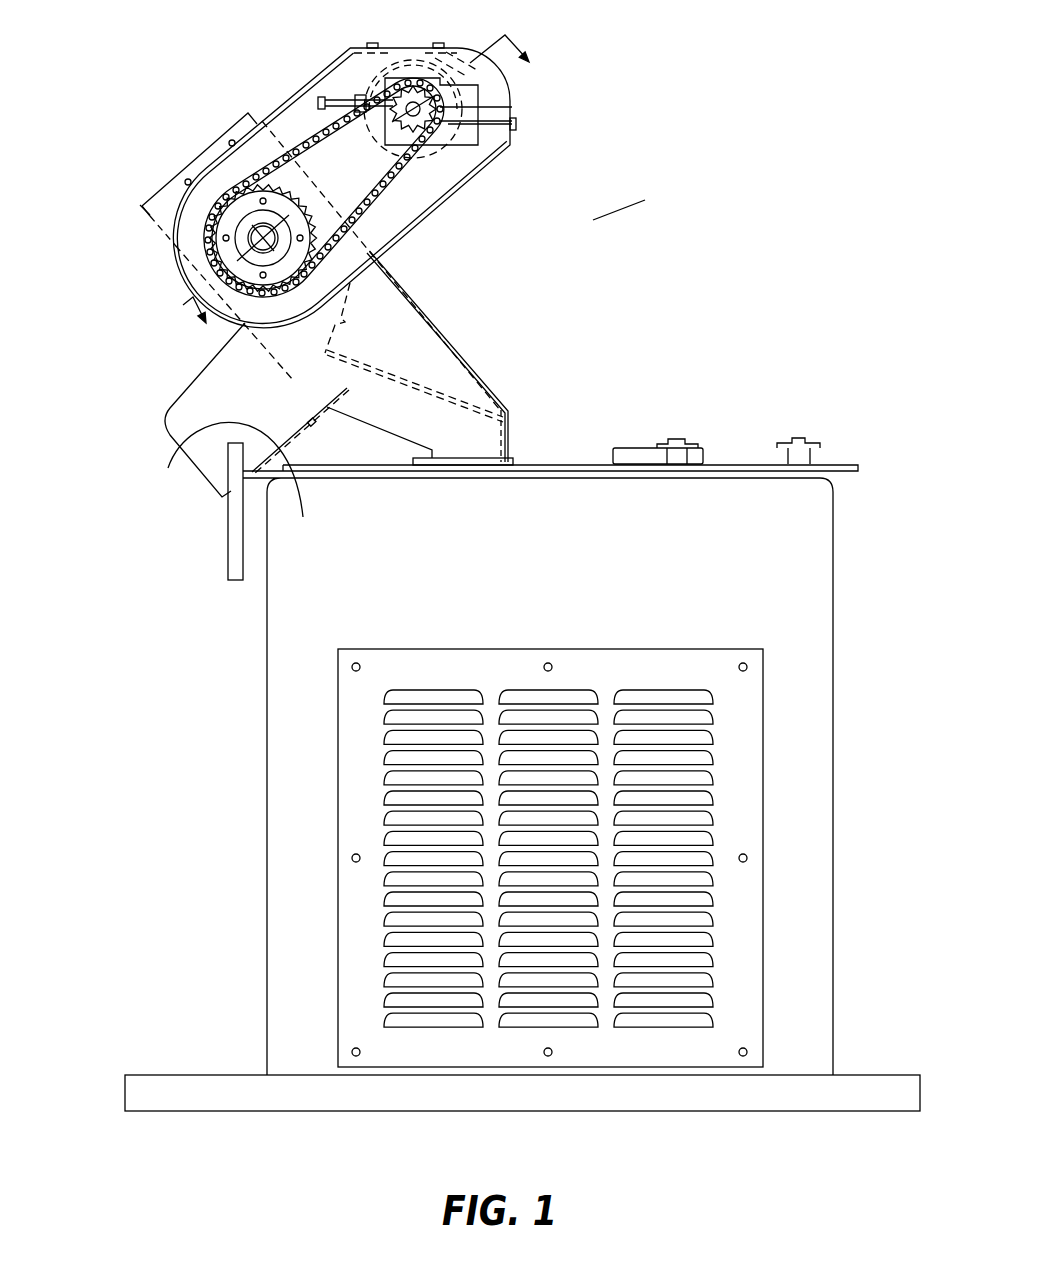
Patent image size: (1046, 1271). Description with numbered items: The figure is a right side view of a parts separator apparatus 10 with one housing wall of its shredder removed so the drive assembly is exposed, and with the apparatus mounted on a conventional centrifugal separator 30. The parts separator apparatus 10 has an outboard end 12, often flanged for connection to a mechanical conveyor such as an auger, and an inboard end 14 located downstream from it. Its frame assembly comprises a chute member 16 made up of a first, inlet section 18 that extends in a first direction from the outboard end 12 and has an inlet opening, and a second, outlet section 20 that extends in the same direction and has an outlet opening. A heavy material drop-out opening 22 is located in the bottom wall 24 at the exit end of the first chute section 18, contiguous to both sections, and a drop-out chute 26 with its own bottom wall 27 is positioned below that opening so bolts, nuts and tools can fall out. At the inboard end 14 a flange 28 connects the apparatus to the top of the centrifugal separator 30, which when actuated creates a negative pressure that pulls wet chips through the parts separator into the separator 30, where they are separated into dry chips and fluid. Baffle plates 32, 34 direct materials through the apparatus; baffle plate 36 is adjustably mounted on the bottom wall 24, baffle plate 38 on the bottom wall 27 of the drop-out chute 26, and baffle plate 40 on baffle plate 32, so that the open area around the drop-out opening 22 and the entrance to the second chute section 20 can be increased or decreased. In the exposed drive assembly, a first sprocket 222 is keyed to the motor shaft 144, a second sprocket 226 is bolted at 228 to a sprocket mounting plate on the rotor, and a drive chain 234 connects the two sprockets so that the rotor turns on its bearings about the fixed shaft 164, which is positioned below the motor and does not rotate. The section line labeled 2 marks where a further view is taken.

The section line 2- 2 is at (363, 195).
The parts separator apparatus 10 is at (585, 223).
The outboard end 12 is at (170, 178).
The inboard end 14 is at (504, 420).
The chute member 16 is at (138, 210).
The first, inlet section 18 is at (150, 220).
The second, outlet section 20 is at (406, 466).
The heavy material drop-out opening 22 is at (303, 404).
The bottom wall 24 is at (162, 232).
The drop-out chute 26 is at (227, 469).
The bottom wall 27 is at (269, 511).
The flange 28 is at (513, 460).
The centrifugal separator 30 is at (808, 518).
The baffle plate 32 is at (348, 303).
The baffle plate 34 is at (412, 378).
The baffle plate 36 is at (265, 347).
The baffle plate 38 is at (337, 397).
The baffle plate 40 is at (325, 366).
The shaft 144 is at (492, 143).
The fixed shaft 164 is at (313, 272).
The first sprocket 222 is at (368, 97).
The second sprocket 226 is at (292, 187).
The bolts 228 is at (263, 201).
The drive chain 234 is at (385, 203).